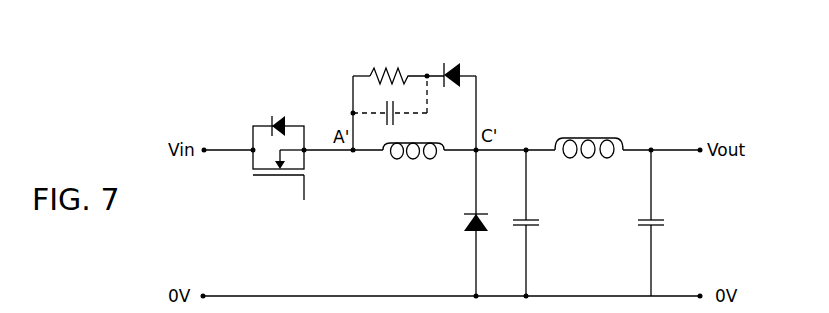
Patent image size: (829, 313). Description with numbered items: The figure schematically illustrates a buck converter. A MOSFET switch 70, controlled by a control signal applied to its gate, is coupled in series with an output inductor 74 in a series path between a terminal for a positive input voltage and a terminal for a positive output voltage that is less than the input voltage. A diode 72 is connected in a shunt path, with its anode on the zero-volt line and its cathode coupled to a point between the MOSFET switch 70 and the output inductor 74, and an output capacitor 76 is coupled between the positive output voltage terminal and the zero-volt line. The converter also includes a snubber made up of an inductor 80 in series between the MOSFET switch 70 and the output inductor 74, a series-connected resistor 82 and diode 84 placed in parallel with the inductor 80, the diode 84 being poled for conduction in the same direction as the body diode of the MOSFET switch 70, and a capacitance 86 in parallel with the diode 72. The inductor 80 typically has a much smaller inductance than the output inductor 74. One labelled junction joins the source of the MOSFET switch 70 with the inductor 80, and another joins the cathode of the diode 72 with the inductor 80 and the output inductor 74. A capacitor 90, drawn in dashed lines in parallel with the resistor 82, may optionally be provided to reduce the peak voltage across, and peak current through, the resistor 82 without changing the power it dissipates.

The MOSFET switch 70 is at (278, 180).
The diode 72 is at (462, 220).
The output inductor 74 is at (595, 133).
The output capacitor 76 is at (632, 220).
The inductor 80 is at (408, 162).
The resistor 82 is at (393, 63).
The diode 84 is at (452, 57).
The capacitance 86 is at (542, 220).
The capacitor 90 is at (397, 118).